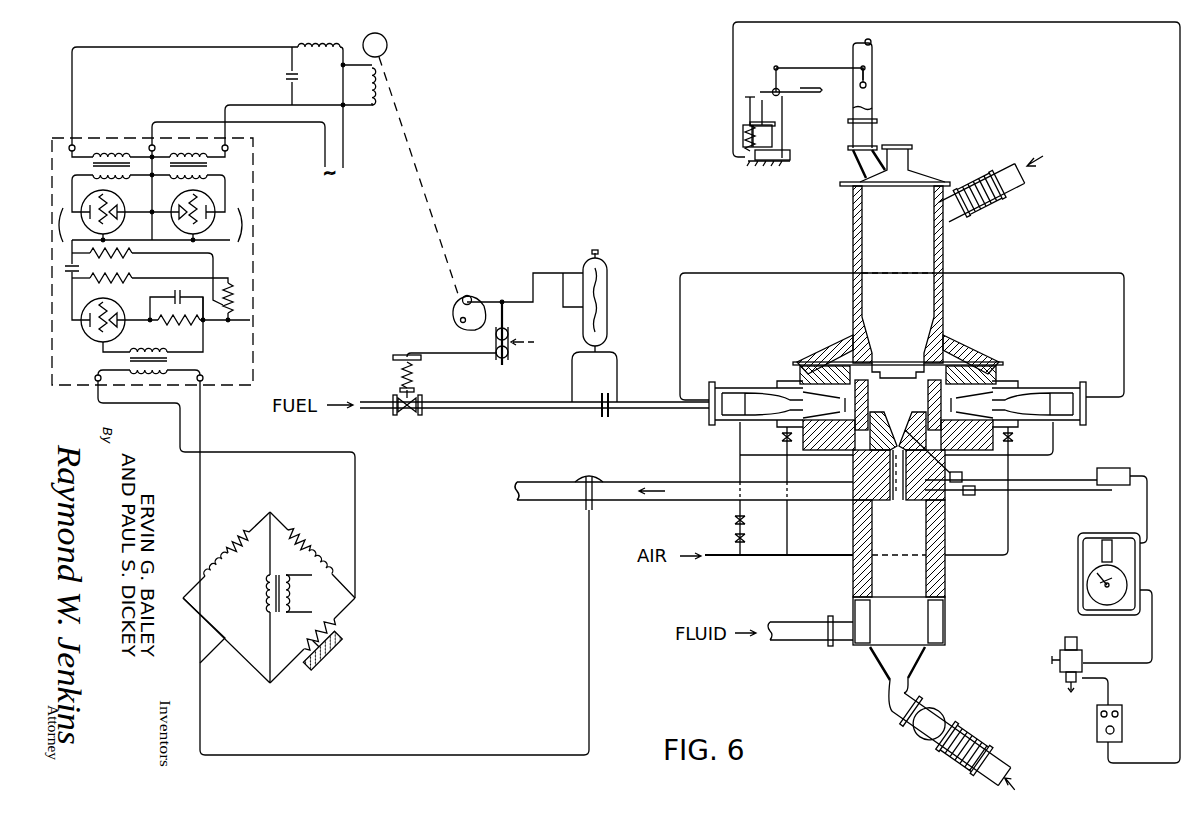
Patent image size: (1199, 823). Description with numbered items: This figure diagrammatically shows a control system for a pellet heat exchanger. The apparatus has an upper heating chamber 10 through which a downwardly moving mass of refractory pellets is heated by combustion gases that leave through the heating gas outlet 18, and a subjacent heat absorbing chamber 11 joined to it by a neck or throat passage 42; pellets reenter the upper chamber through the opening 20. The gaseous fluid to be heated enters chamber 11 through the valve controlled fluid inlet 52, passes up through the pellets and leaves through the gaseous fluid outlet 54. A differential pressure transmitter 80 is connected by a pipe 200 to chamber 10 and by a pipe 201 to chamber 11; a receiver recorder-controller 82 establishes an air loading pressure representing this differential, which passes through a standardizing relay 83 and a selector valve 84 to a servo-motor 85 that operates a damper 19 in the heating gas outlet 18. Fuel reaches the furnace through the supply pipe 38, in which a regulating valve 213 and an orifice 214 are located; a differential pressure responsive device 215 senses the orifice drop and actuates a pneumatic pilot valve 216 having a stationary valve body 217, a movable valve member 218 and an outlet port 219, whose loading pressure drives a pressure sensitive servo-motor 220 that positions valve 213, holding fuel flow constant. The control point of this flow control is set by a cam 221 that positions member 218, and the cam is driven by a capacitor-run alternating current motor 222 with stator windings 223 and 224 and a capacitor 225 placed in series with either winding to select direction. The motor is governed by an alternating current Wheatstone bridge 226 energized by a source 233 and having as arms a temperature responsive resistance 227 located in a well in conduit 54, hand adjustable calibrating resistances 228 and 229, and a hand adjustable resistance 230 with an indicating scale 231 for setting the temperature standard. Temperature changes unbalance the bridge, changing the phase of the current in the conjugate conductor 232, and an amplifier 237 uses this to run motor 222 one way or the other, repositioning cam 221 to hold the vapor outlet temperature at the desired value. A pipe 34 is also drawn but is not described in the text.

The upper heating chamber 10 is at (910, 309).
The heat absorbing or reaction chamber 11 is at (910, 536).
The heating gas outlet 18 is at (874, 101).
The damper 19 is at (868, 86).
The opening 20 is at (950, 216).
The air pipe 34 is at (736, 443).
The fuel supply pipe 38 is at (632, 408).
The throat passage 42 is at (900, 440).
The fluid inlet conduit 52 is at (806, 641).
The gaseous fluid outlet conduit 54 is at (690, 500).
The differential pressure transmitter 80 is at (1108, 468).
The receiver recorder-controller 82 is at (1085, 535).
The standardizing relay 83 is at (1061, 646).
The selector valve 84 is at (1097, 723).
The servo-motor 85 is at (786, 128).
The pipe 200 is at (1060, 478).
The pipe 201 is at (1070, 491).
The regulating valve 213 is at (415, 410).
The orifice 214 is at (603, 413).
The differential pressure responsive device 215 is at (607, 272).
The pneumatic pilot valve 216 is at (552, 378).
The valve body 217 is at (496, 340).
The movable valve member 218 is at (506, 314).
The outlet port 219 is at (498, 356).
The pressure sensitive servo-motor 220 is at (395, 361).
The cam 221 is at (460, 304).
The capacitor-run alternating current motor 222 is at (426, 41).
The stator winding 223 is at (304, 43).
The stator winding 224 is at (380, 84).
The capacitor 225 is at (286, 75).
The alternating current Wheatstone bridge 226 is at (292, 598).
The temperature responsive resistance 227 is at (582, 501).
The hand adjustable resistance 228 is at (232, 543).
The hand adjustable resistance 229 is at (296, 535).
The hand adjustable resistance 230 is at (297, 660).
The indicating scale 231 is at (345, 651).
The conjugate conductor 232 is at (200, 370).
The source 233 is at (270, 562).
The amplifier 237 is at (178, 261).